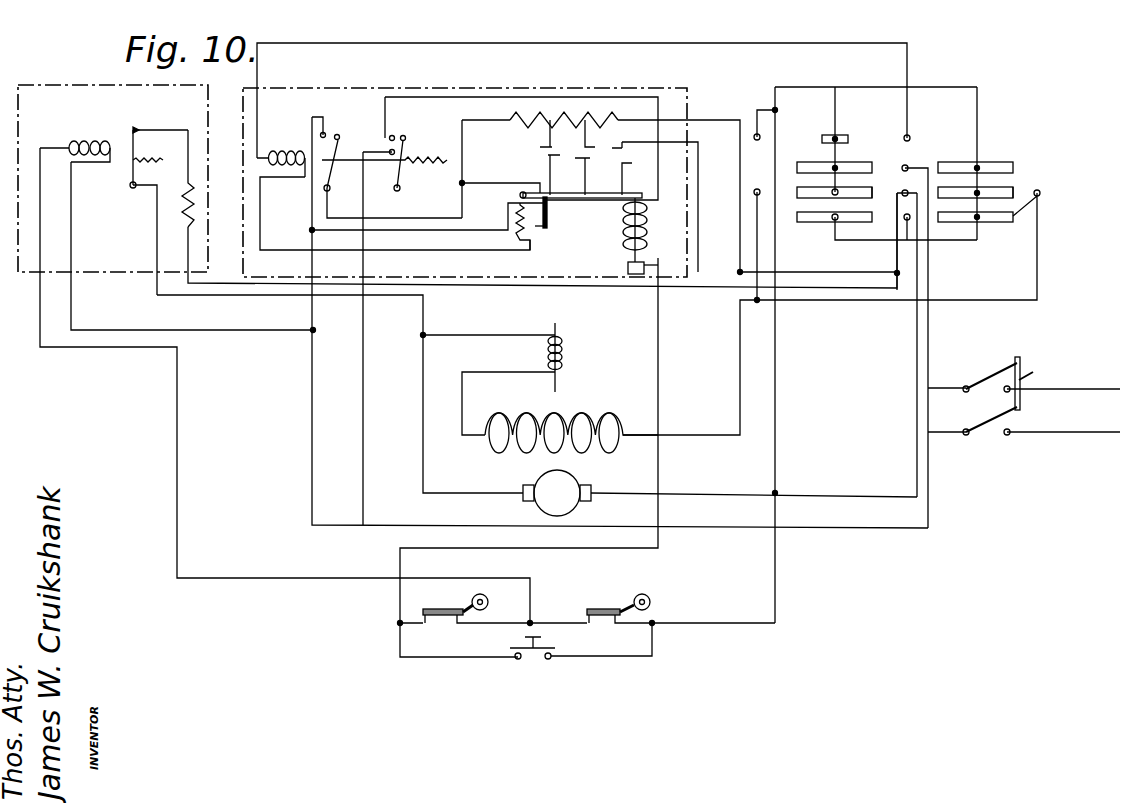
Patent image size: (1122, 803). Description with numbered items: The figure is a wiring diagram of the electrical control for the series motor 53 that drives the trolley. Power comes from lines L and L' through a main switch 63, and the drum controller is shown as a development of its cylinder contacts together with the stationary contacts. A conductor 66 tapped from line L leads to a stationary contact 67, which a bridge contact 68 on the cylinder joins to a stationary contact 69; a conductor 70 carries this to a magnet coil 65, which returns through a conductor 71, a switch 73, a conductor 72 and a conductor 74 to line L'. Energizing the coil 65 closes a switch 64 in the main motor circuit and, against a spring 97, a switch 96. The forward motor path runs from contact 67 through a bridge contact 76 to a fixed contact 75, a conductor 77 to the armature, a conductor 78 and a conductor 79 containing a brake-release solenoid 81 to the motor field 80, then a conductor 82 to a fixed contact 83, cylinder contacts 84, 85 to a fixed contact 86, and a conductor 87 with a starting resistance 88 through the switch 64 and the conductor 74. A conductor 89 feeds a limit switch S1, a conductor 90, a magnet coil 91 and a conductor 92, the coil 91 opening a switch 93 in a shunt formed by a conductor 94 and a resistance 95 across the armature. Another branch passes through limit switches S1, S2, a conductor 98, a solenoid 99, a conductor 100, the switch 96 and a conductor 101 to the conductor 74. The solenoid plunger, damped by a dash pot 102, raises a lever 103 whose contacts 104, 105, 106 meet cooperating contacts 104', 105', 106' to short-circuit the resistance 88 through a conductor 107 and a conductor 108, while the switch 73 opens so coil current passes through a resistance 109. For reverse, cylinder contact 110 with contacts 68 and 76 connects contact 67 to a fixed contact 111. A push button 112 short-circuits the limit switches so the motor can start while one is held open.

The motor 53 is at (570, 490).
The main switch 63 is at (1019, 366).
The switch 64 is at (337, 148).
The magnet coil 65 is at (281, 150).
The conductor 66 is at (930, 267).
The stationary contact 67 is at (908, 166).
The bridge contact 68 is at (822, 140).
The stationary contact 69 is at (910, 138).
The conductor 70 is at (680, 43).
The conductor 71 is at (262, 240).
The conductor 72 is at (427, 228).
The switch 73 is at (542, 230).
The conductor 74 is at (312, 209).
The fixed contact 75 is at (907, 229).
The bridge contact 76 is at (866, 170).
The conductor 77 is at (915, 332).
The conductor 78 is at (272, 296).
The conductor 79 is at (506, 335).
The motor field 80 is at (582, 410).
The solenoid 81 is at (563, 348).
The conductor 82 is at (740, 370).
The fixed contact 83 is at (1040, 194).
The cylinder contact 84 is at (1013, 193).
The cylinder contact 85 is at (815, 221).
The fixed contact 86 is at (903, 219).
The conductor 87 is at (735, 123).
The starting resistance 88 is at (582, 118).
The conductor 89 is at (776, 406).
The conductor 90 is at (178, 516).
The magnet coil 91 is at (75, 143).
The conductor 92 is at (72, 240).
The switch 93 is at (133, 170).
The conductor 94 is at (188, 131).
The resistance 95 is at (188, 195).
The switch 96 is at (405, 140).
The spring 97 is at (400, 164).
The conductor 98 is at (658, 346).
The solenoid 99 is at (622, 230).
The conductor 100 is at (511, 99).
The conductor 101 is at (364, 345).
The dash pot 102 is at (627, 268).
The lever 103 is at (636, 194).
The contact 104 is at (538, 175).
The cooperating contact 104' is at (524, 138).
The contact 105 is at (573, 176).
The cooperating contact 105' is at (574, 135).
The contact 106 is at (613, 179).
The cooperating contact 106' is at (611, 139).
The conductor 107 is at (698, 190).
The conductor 108 is at (500, 178).
The resistance 109 is at (515, 222).
The cylinder contact 110 is at (985, 168).
The fixed contact 111 is at (755, 195).
The push button 112 is at (533, 658).
The limit switch S1 is at (652, 606).
The limit switch S2 is at (464, 606).
The line L is at (1063, 377).
The line L' is at (1063, 447).